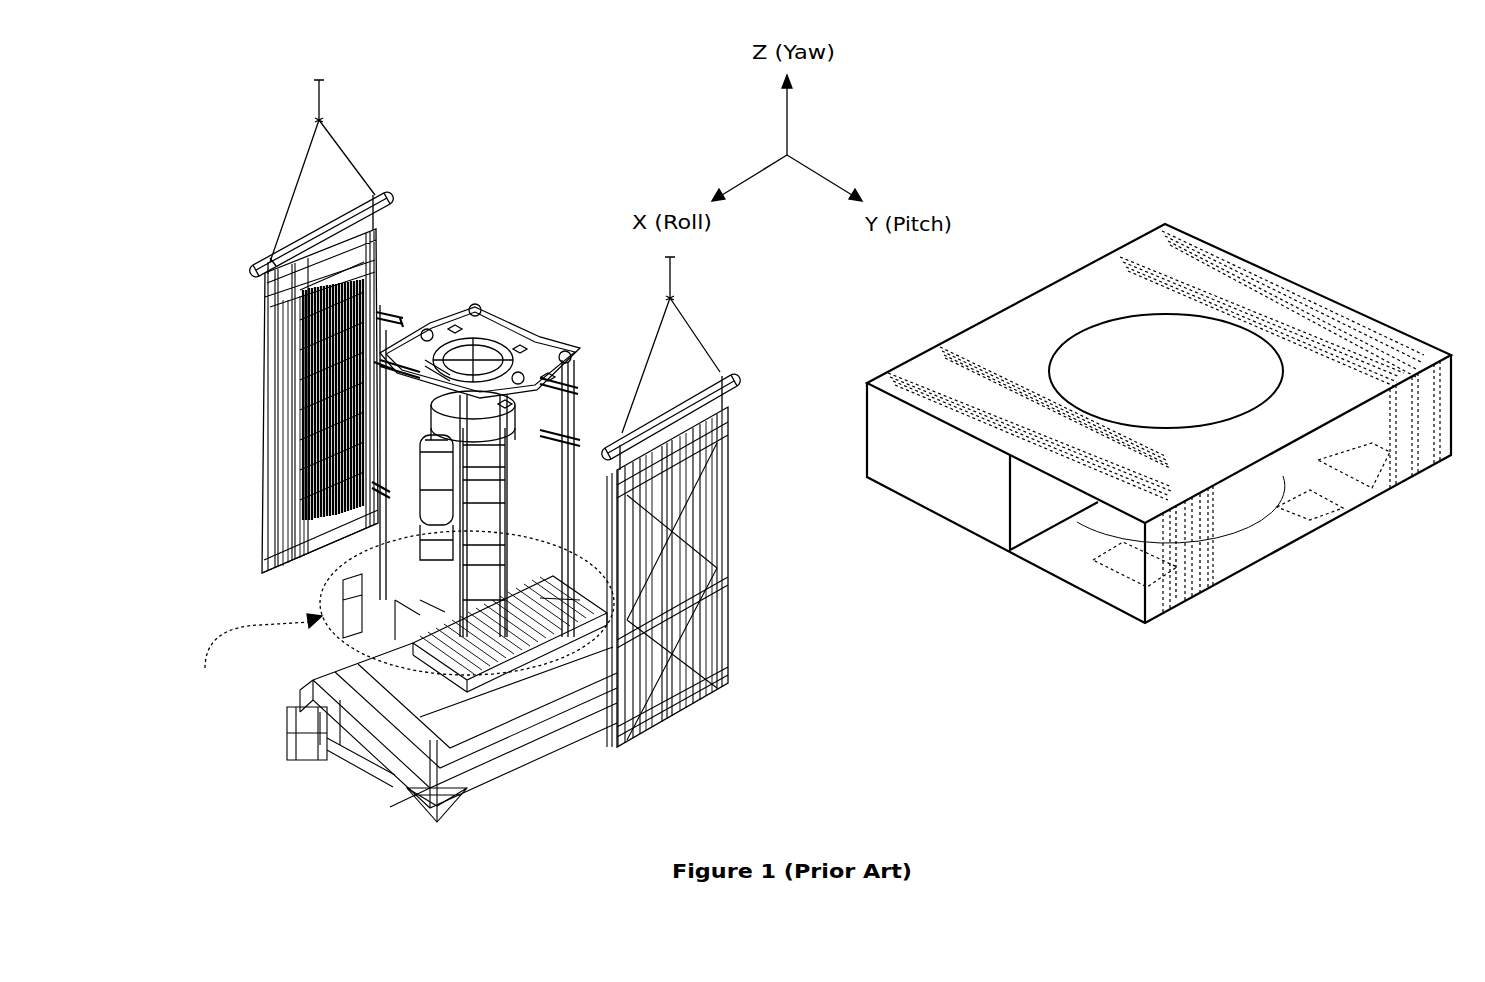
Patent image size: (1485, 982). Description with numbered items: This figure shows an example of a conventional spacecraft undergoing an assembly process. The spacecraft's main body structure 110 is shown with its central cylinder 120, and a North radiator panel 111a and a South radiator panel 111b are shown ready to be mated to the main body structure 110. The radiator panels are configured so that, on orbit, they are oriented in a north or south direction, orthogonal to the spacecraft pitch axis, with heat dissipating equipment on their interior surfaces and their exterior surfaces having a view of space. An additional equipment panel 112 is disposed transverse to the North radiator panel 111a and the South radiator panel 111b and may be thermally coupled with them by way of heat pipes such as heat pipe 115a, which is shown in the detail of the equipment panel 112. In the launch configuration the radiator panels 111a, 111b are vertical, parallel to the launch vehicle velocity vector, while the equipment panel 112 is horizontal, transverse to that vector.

The main body structure 110 is at (506, 266).
The North radiator panel 111a is at (700, 612).
The South radiator panel 111b is at (256, 387).
The equipment panel 112 is at (328, 579).
The heat pipe 115a is at (1222, 548).
The central cylinder 120 is at (523, 412).